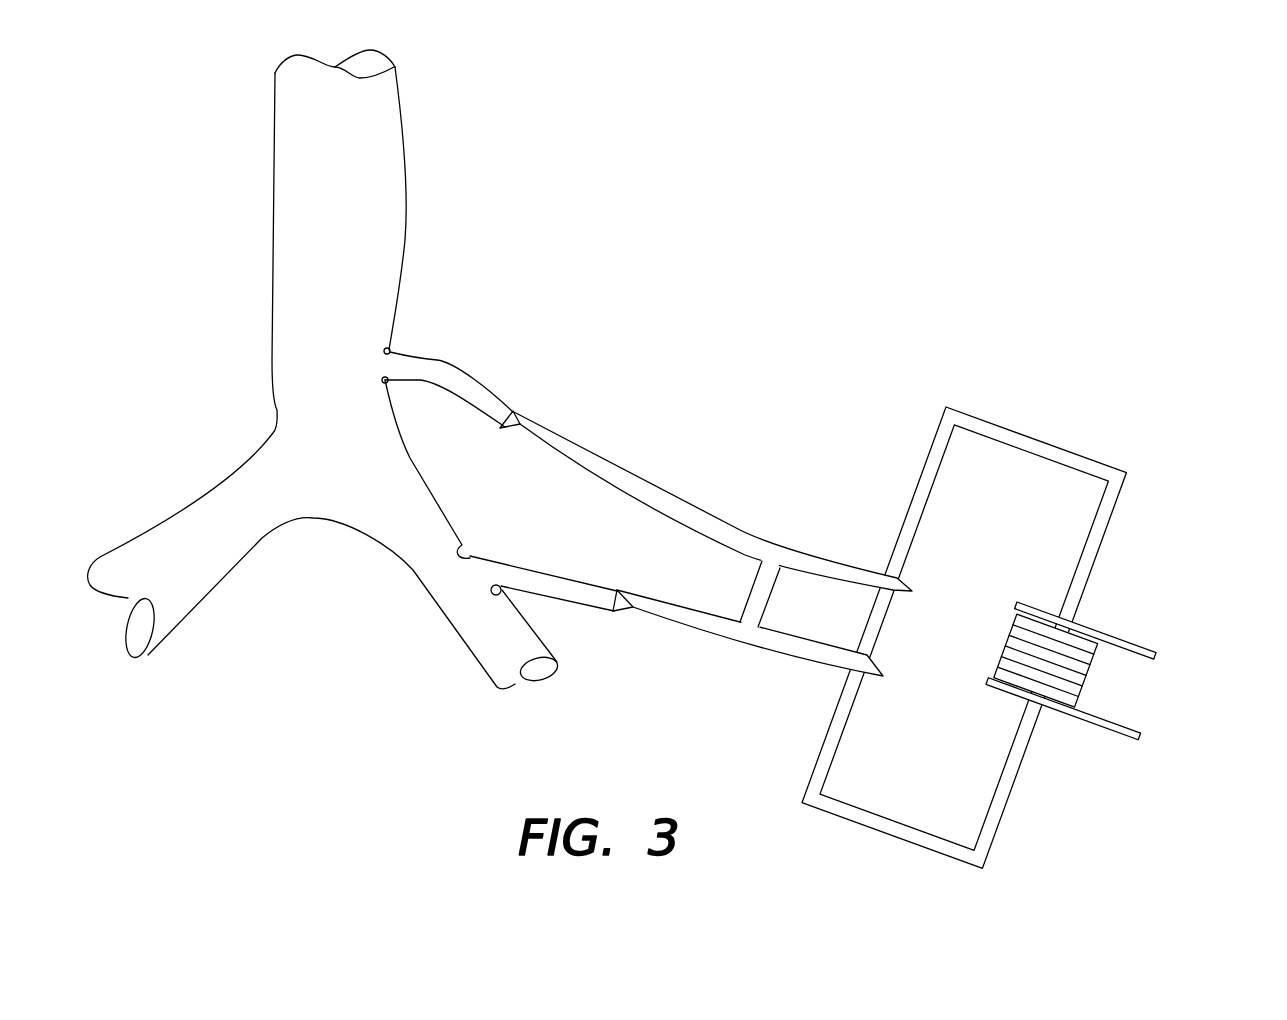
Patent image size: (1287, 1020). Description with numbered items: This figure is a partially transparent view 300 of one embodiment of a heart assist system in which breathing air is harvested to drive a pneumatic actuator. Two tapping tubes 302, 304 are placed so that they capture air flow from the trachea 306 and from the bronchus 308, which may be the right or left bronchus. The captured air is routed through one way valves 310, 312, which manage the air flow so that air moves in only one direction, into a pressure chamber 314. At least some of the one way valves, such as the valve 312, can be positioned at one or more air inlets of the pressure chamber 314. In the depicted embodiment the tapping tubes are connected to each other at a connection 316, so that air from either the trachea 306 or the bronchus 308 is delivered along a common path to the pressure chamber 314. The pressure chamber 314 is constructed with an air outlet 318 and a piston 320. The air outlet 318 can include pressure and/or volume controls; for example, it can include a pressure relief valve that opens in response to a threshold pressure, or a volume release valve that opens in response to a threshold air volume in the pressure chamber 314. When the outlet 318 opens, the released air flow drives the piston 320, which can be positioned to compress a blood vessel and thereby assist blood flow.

The partially transparent view 300 is at (816, 479).
The tapping tube 302 is at (438, 360).
The tapping tube 304 is at (503, 563).
The trachea 306 is at (272, 268).
The bronchus 308 is at (453, 628).
The one way valve 310 is at (714, 550).
The one way valve 312 is at (910, 588).
The pressure chamber 314 is at (1003, 423).
The connection of tapping tubes 316 is at (747, 595).
The air outlet 318 is at (1130, 640).
The piston 320 is at (1090, 668).